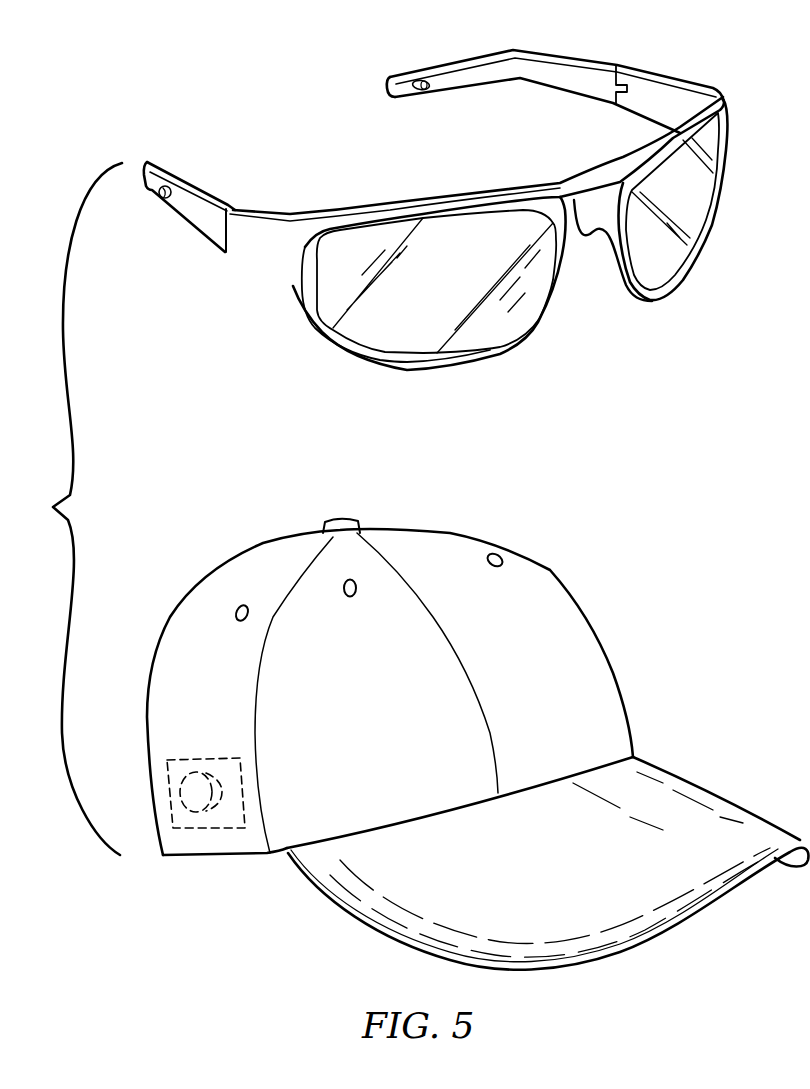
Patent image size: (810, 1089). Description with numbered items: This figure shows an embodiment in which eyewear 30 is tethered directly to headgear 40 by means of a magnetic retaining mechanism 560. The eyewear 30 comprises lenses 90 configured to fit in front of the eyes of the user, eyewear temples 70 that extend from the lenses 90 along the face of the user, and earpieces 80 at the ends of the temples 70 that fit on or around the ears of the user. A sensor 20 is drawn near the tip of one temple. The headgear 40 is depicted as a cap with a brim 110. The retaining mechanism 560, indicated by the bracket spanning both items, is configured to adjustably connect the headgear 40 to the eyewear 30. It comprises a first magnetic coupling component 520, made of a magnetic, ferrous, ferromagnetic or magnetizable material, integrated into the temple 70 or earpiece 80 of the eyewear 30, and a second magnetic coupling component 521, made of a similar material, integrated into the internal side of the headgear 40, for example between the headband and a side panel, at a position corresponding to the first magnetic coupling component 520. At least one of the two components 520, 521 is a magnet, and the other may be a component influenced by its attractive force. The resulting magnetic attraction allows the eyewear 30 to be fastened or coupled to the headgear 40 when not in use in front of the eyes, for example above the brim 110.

The eyewear 30 is at (631, 58).
The eyewear temple 70 is at (681, 82).
The earpiece 80 is at (466, 78).
The sensor 20 is at (417, 91).
The first magnetic coupling component 520 is at (160, 198).
The lens 90 is at (697, 201).
The headgear 40 is at (560, 577).
The second magnetic coupling component 521 is at (177, 797).
The brim 110 is at (657, 927).
The retaining mechanism 560 is at (70, 509).